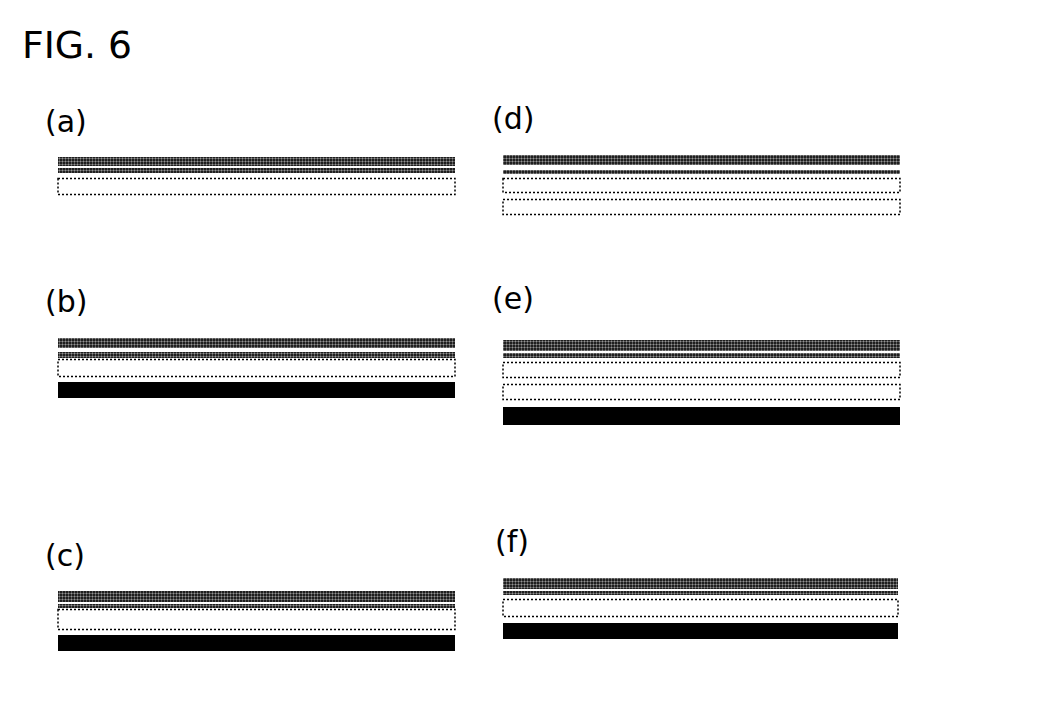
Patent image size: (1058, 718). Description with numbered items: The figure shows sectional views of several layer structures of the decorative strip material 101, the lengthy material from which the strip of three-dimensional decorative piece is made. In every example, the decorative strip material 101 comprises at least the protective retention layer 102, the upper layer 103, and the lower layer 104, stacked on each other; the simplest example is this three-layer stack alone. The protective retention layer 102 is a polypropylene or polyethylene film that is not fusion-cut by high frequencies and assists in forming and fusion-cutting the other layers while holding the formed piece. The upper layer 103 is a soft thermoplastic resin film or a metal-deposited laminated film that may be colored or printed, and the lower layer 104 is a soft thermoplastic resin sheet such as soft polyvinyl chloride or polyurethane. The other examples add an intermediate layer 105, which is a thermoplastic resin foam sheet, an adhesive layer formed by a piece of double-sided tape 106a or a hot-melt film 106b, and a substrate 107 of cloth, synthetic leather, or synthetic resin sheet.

The decorative strip material 101 is at (491, 356).
The protective retention layer 102 is at (382, 159).
The upper layer 103 is at (410, 170).
The lower layer 104 is at (437, 187).
The intermediate layer 105 is at (868, 187).
The double-sided tape 106a is at (440, 651).
The hot-melt film 106b is at (895, 653).
The substrate 107 is at (440, 397).